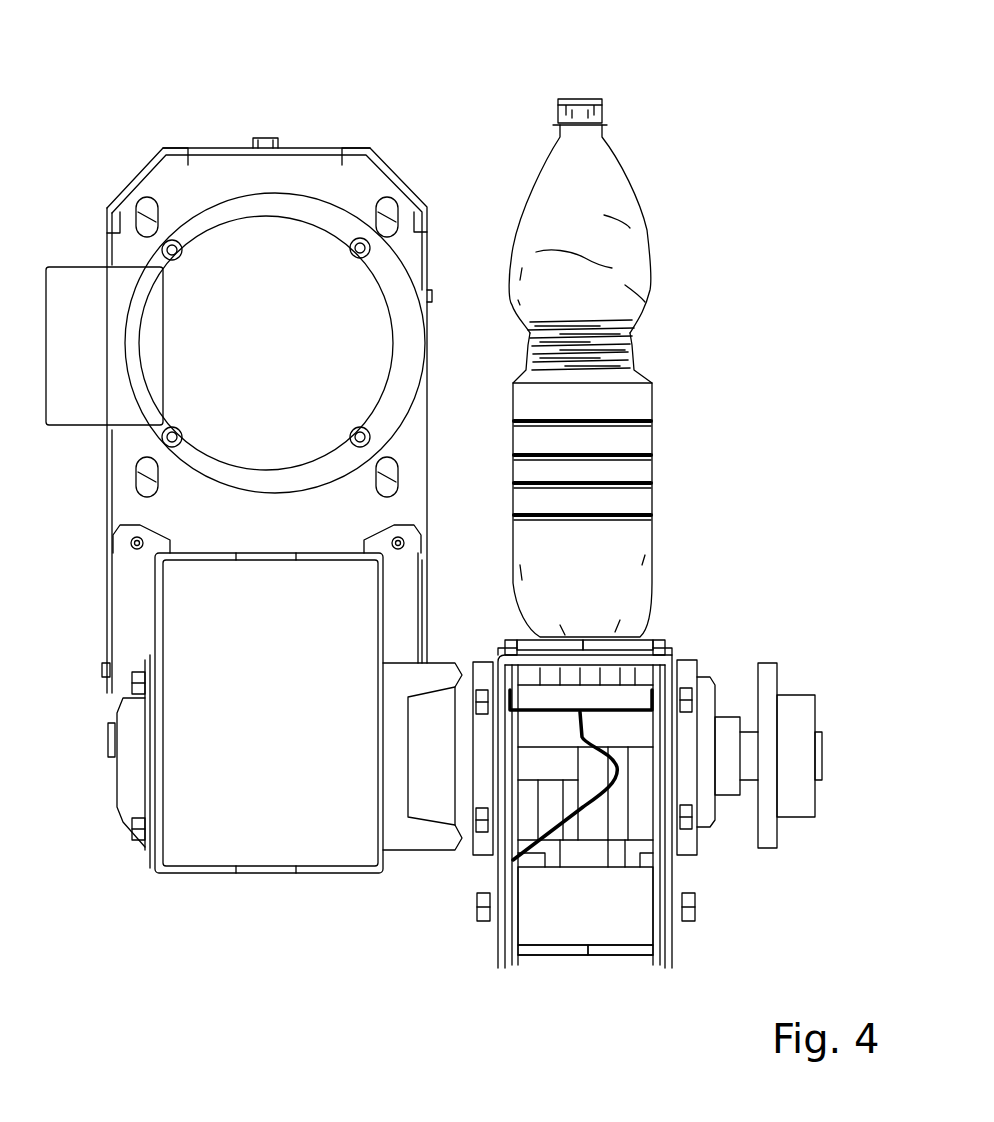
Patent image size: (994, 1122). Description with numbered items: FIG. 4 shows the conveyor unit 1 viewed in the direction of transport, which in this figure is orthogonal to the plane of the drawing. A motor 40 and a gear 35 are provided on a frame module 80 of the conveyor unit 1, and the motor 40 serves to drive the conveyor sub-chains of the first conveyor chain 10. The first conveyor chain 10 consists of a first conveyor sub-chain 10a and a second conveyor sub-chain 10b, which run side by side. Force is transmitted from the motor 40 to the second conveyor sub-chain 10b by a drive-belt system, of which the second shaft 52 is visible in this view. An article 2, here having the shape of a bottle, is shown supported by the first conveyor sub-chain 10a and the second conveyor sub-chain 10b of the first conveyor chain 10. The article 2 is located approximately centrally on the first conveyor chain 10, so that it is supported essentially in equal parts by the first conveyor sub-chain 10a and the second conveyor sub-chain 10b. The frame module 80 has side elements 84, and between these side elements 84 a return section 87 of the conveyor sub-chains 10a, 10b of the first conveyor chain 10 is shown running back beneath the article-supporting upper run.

The conveyor unit 1 is at (489, 160).
The article 2 is at (620, 243).
The first conveyor chain 10 is at (513, 860).
The first conveyor sub-chain 10a is at (540, 645).
The second conveyor sub-chain 10b is at (636, 643).
The gear 35 is at (294, 745).
The motor 40 is at (283, 372).
The second shaft 52 is at (800, 710).
The frame module 80 is at (695, 878).
The side elements 84 is at (497, 952).
The return section 87 is at (577, 970).